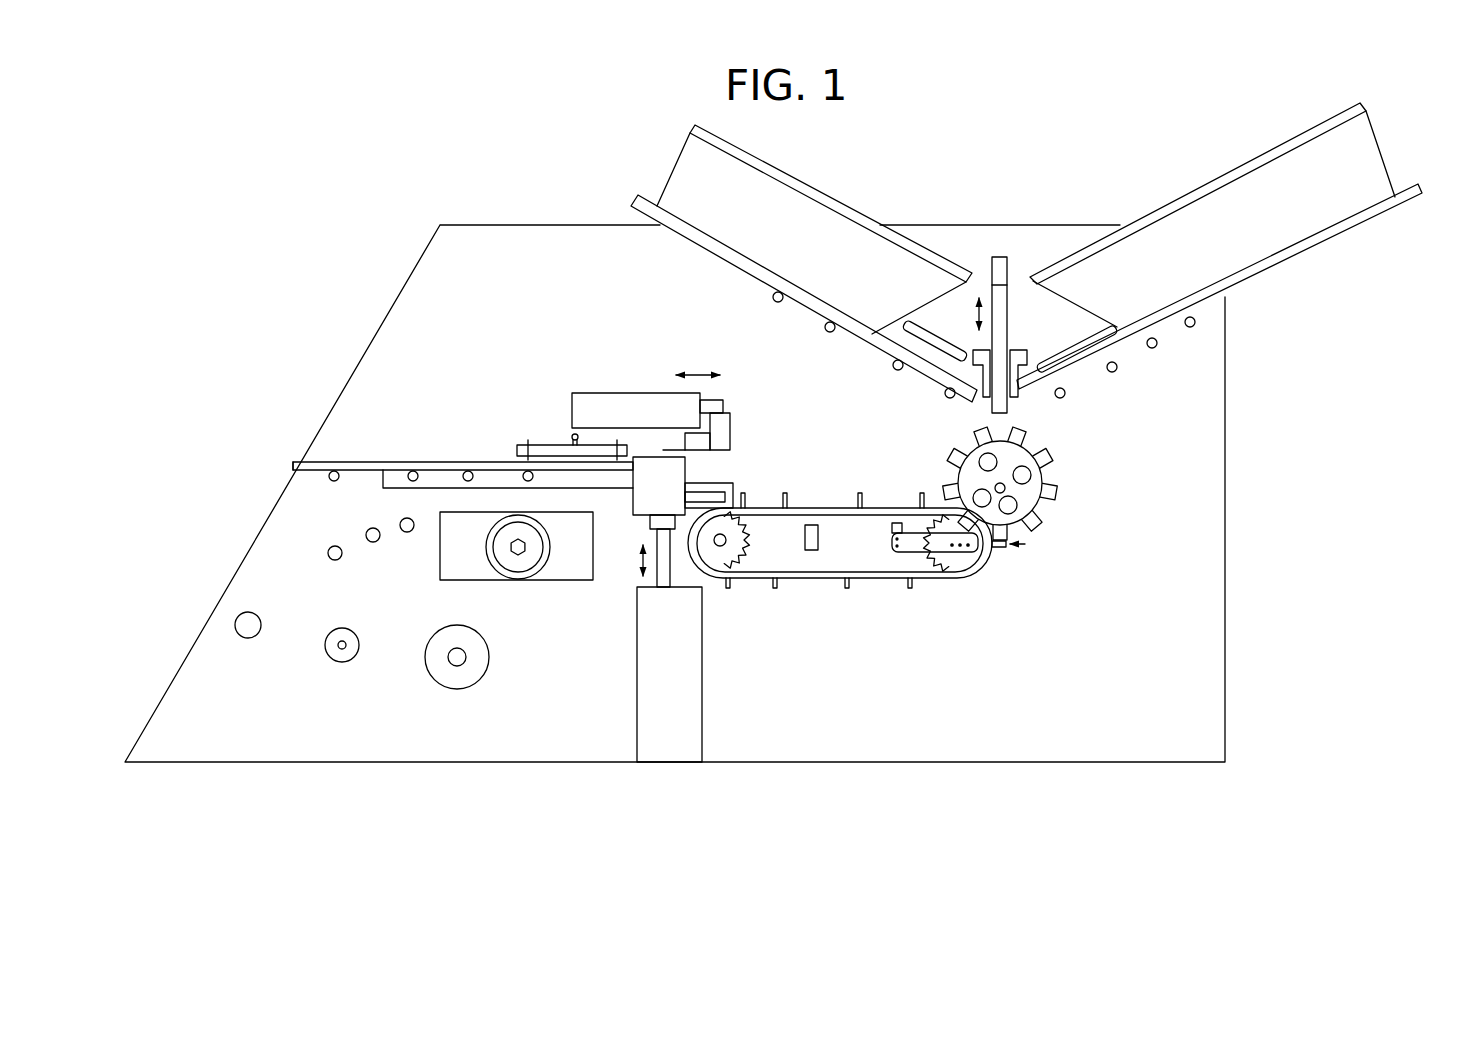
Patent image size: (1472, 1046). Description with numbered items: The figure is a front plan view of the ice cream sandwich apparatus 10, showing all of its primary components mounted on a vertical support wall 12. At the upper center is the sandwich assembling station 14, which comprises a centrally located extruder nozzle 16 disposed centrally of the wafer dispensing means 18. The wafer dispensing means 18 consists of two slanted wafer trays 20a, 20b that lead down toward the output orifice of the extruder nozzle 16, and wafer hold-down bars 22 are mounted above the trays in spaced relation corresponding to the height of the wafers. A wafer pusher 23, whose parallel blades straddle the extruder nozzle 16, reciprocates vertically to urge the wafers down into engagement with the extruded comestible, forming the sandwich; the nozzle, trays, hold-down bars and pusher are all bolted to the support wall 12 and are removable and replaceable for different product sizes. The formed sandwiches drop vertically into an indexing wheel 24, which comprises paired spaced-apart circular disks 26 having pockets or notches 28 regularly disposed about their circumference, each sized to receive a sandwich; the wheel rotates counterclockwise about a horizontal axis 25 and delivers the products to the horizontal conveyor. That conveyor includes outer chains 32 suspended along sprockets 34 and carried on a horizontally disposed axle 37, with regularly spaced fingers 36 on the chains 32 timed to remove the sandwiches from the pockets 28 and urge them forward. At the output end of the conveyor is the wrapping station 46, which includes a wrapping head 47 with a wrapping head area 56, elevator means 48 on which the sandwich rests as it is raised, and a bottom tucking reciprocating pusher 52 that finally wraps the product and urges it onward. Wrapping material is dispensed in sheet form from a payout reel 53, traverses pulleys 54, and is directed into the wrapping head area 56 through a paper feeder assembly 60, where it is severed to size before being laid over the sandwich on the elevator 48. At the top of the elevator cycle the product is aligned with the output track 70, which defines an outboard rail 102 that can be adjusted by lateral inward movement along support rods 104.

The ice cream sandwich apparatus 10 is at (733, 493).
The vertical support wall 12 is at (1210, 407).
The sandwich assembling station 14 is at (1033, 260).
The extruder nozzle 16 is at (1005, 290).
The wafer dispensing means 18 is at (1267, 157).
The wafer tray 20a is at (1237, 234).
The wafer tray 20b is at (672, 165).
The wafer hold-down bars 22 is at (930, 333).
The wafer pusher 23 is at (1017, 362).
The indexing wheel 24 is at (1013, 552).
The horizontal axis 25 is at (997, 485).
The circular disks 26 is at (1027, 540).
The pockets or notches 28 is at (1013, 470).
The outer chains 32 is at (895, 551).
The sprockets 34 is at (985, 568).
The fingers 36 is at (860, 495).
The axle 37 is at (722, 548).
The wrapping station 46 is at (516, 598).
The wrapping head 47 is at (702, 470).
The elevator means 48 is at (643, 527).
The bottom tucking reciprocating pusher 52 is at (693, 437).
The payout reel 53 is at (448, 672).
The pulleys 54 is at (340, 662).
The wrapping head area 56 is at (464, 567).
The paper feeder assembly 60 is at (593, 607).
The output track 70 is at (419, 458).
The outboard rail 102 is at (293, 462).
The support rods 104 is at (410, 481).